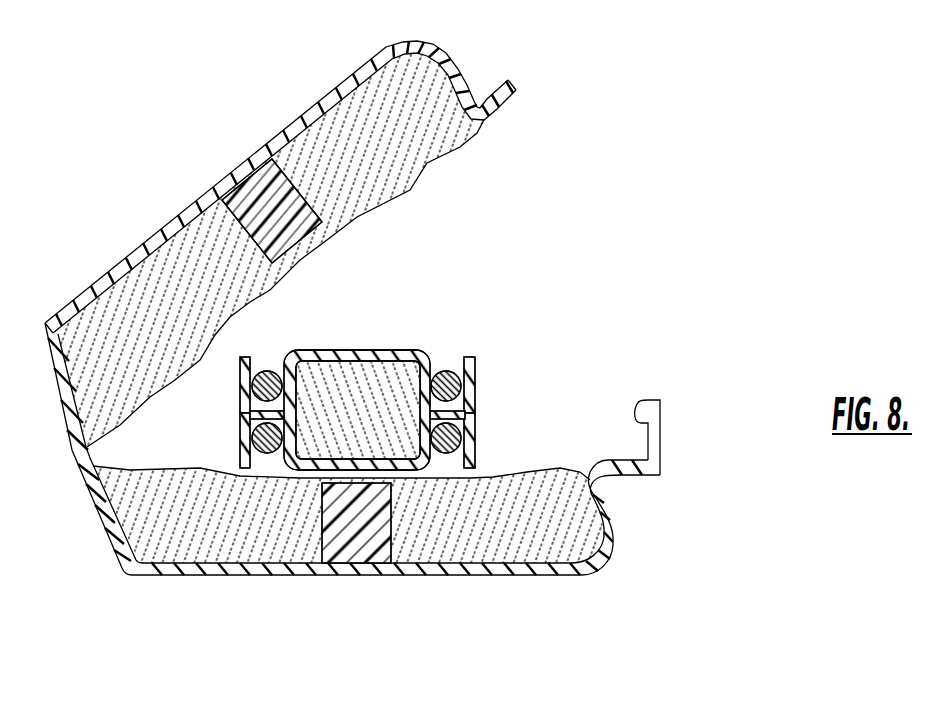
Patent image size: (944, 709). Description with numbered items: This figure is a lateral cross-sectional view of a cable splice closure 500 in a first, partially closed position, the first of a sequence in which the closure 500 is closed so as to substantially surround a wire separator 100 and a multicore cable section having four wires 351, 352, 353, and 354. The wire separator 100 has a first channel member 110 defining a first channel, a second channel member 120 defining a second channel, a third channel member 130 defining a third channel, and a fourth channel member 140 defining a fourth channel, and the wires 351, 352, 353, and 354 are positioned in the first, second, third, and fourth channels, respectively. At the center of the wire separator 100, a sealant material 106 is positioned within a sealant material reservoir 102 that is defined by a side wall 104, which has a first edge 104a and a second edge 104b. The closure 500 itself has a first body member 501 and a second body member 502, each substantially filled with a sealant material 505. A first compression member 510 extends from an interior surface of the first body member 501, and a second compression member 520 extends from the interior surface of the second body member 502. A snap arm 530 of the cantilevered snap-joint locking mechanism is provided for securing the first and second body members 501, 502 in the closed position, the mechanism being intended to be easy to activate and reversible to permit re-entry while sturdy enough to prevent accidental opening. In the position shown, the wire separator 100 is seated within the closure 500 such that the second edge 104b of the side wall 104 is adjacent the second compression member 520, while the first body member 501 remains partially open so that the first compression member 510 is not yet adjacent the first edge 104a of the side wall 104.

The wire separator 100 is at (365, 475).
The sealant material reservoir 102 is at (370, 475).
The side wall 104 is at (432, 353).
The first edge 104a is at (302, 470).
The second edge 104b is at (325, 351).
The sealant material 106 is at (383, 443).
The first channel member 110 is at (240, 361).
The second channel member 120 is at (478, 370).
The third channel member 130 is at (240, 455).
The fourth channel member 140 is at (478, 460).
The wire 351 is at (270, 372).
The wire 352 is at (452, 372).
The wire 353 is at (268, 452).
The wire 354 is at (447, 455).
The closure 500 is at (222, 173).
The first body member 501 is at (373, 45).
The second body member 502 is at (538, 577).
The sealant material 505 is at (476, 126).
The first compression member 510 is at (280, 190).
The second compression member 520 is at (360, 540).
The snap arm 530 is at (654, 398).